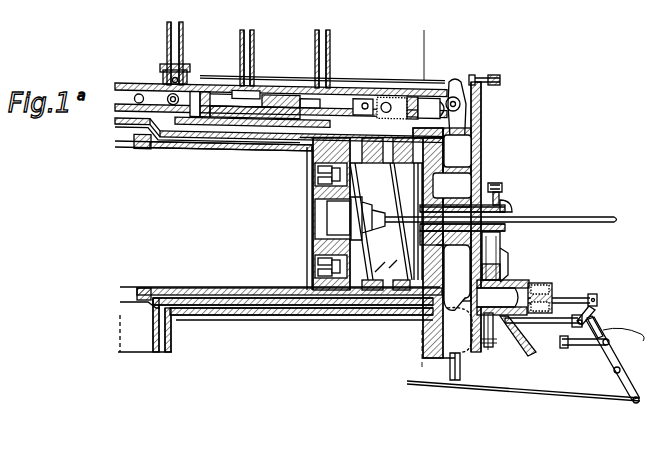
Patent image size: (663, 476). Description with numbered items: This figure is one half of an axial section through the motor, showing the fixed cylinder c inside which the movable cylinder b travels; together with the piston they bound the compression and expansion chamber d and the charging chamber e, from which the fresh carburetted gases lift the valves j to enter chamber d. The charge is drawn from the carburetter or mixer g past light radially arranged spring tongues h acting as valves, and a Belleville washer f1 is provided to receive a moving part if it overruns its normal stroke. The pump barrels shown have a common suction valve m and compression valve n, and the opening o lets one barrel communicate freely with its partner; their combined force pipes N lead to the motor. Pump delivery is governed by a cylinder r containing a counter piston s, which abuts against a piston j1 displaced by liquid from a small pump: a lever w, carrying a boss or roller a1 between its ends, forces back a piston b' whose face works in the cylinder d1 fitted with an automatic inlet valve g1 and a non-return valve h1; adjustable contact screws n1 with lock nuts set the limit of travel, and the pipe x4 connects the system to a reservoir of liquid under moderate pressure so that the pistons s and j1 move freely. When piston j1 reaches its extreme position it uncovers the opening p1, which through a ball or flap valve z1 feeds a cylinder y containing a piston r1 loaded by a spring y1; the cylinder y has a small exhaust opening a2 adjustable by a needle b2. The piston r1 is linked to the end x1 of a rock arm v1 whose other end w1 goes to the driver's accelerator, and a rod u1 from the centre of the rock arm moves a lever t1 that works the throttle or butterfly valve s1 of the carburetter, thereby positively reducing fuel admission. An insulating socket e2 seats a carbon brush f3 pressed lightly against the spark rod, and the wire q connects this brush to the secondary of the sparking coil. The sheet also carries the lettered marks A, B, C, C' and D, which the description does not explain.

The combined force pipes N is at (175, 44).
The casing section B is at (121, 198).
The compression valve n is at (168, 76).
The suction valve m is at (171, 93).
The opening o is at (137, 94).
The piston s is at (195, 90).
The cylinder r is at (207, 90).
The pipe x4 is at (254, 46).
The piston j1 is at (282, 92).
The opening p1 is at (330, 40).
The automatic non-return valve h1 is at (362, 97).
The automatic inlet valve g1 is at (384, 96).
The cylinder d1 is at (412, 91).
The section line D is at (402, 4).
The section line C is at (431, 55).
The piston b' is at (441, 87).
The adjustable contact screws n1 is at (500, 79).
The boss or roller a1 is at (460, 104).
The lever w is at (462, 128).
The section line A is at (558, 11).
The movable cylinder b is at (141, 154).
The chamber d is at (199, 209).
The valves j is at (312, 228).
The chamber e is at (386, 221).
The spring tongues h is at (440, 184).
The wire q is at (499, 200).
The brush of carbon f3 is at (515, 204).
The socket of insulating material e2 is at (504, 213).
The exhaust opening a2 is at (560, 217).
The carburetter or mixer g is at (445, 270).
The cylinder y is at (500, 276).
The piston r1 is at (512, 274).
The ball or flap valve z1 is at (508, 262).
The spring y1 is at (556, 283).
The end of rock arm x1 is at (596, 294).
The rock arm v1 is at (596, 311).
The rod u1 is at (520, 323).
The end of rock arm w1 is at (562, 348).
The lever t1 is at (458, 389).
The needle b2 is at (508, 338).
The throttle or butterfly valve s1 is at (420, 340).
The section line C' is at (436, 344).
The fixed cylinder c is at (187, 312).
The Belleville spring or washer f1 is at (380, 275).